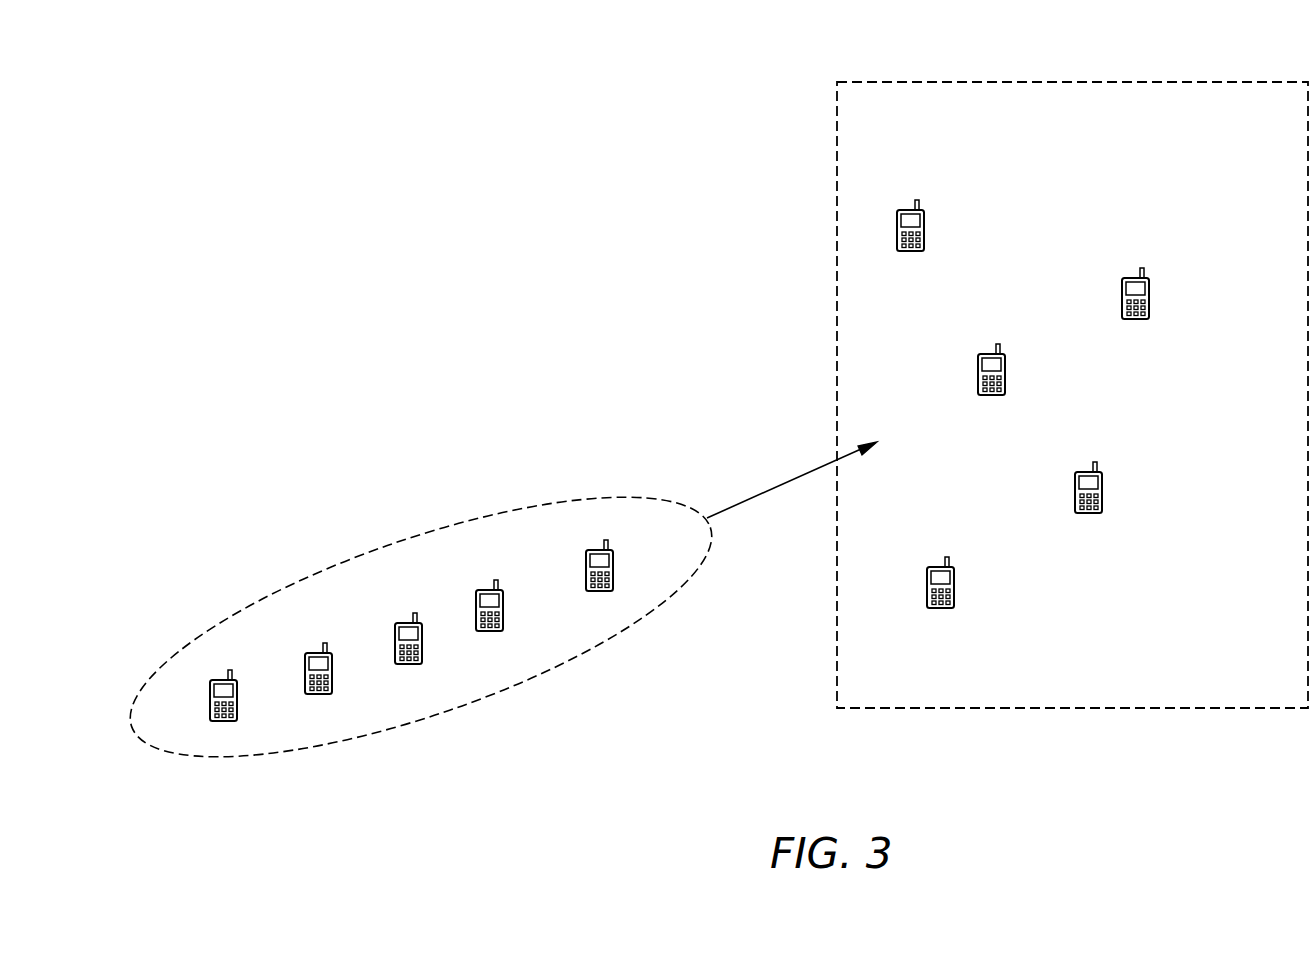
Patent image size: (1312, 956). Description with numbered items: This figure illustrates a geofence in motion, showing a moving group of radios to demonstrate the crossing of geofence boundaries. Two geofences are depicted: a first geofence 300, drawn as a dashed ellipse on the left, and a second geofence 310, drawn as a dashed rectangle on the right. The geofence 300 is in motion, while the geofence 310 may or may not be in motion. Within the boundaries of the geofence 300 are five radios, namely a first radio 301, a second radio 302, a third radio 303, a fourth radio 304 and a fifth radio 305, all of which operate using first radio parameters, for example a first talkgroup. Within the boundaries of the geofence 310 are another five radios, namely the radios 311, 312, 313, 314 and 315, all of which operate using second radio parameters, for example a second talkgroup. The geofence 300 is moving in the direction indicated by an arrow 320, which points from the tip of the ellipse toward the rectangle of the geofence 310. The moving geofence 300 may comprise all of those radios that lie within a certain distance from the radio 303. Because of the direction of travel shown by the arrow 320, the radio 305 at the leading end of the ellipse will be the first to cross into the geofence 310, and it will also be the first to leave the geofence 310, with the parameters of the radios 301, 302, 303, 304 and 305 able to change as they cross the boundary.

The geofence 300 is at (385, 553).
The radio 301 is at (222, 678).
The radio 302 is at (316, 651).
The radio 303 is at (406, 622).
The radio 304 is at (488, 590).
The radio 305 is at (596, 550).
The geofence 310 is at (1073, 82).
The radio 311 is at (940, 567).
The radio 312 is at (1088, 472).
The radio 313 is at (990, 354).
The radio 314 is at (1135, 278).
The radio 315 is at (910, 210).
The arrow 320 is at (770, 485).